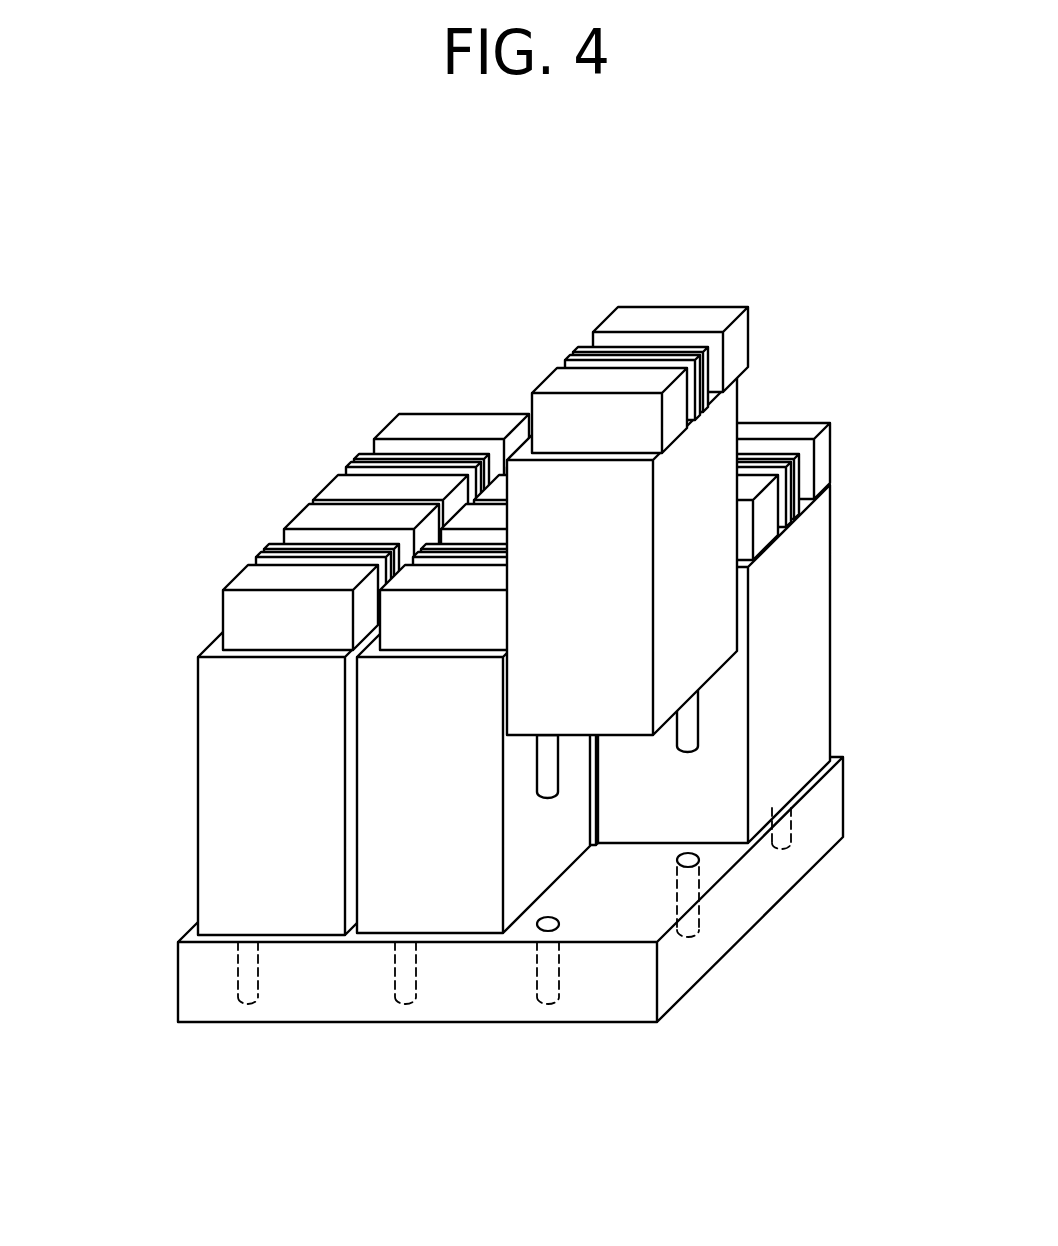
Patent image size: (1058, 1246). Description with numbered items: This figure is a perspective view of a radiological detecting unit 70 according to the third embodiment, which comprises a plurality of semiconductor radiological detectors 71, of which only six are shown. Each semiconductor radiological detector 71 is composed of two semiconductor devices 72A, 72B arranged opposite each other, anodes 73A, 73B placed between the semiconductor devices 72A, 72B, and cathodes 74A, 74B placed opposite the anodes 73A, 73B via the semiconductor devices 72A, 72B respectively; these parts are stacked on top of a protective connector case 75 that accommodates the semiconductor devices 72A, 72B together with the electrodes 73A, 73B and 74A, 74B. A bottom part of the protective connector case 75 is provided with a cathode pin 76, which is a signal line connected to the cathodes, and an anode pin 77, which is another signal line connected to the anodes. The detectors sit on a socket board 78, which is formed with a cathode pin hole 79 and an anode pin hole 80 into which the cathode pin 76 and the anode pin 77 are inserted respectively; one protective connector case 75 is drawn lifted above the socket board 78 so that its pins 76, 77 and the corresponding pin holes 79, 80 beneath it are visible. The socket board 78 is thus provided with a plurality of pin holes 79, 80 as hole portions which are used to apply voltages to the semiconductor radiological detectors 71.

The radiological detecting unit 70 is at (499, 689).
The semiconductor radiological detector 71 is at (577, 342).
The semiconductor device 72A is at (348, 487).
The semiconductor device 72B is at (282, 546).
The anode 73A is at (253, 560).
The anode 73B is at (274, 552).
The cathode 74A is at (237, 615).
The cathode 74B is at (392, 442).
The protective connector case 75 is at (390, 827).
The cathode pin 76 is at (548, 782).
The anode pin 77 is at (690, 727).
The socket board 78 is at (750, 895).
The cathode pin hole 79 is at (403, 1004).
The anode pin hole 80 is at (685, 938).